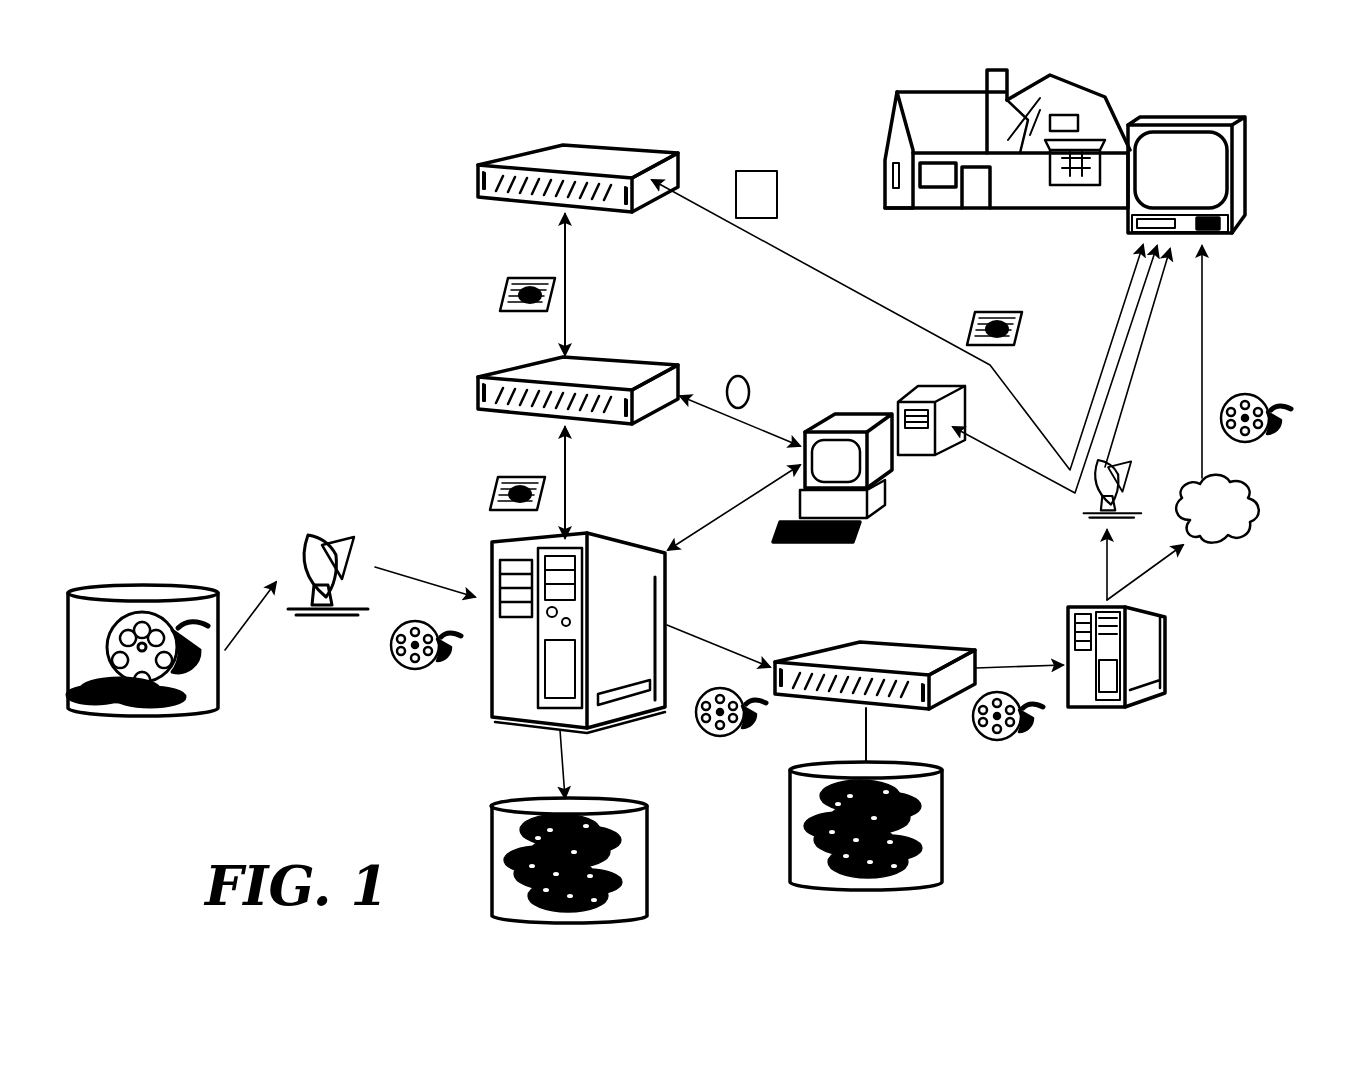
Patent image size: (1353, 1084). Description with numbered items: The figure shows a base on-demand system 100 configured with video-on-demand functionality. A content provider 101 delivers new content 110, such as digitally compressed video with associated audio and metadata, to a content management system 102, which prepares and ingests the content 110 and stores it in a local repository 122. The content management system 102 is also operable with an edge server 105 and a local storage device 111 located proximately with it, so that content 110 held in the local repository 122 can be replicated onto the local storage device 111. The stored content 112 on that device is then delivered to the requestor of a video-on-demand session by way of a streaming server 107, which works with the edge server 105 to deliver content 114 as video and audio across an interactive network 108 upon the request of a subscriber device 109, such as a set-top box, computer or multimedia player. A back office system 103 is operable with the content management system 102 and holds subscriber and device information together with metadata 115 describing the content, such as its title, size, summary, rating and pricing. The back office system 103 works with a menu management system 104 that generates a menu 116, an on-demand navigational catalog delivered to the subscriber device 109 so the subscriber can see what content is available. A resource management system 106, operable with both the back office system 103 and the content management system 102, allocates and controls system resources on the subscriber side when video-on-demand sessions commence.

The base on-demand system 100 is at (226, 452).
The content provider 101 is at (205, 688).
The content management system 102 is at (607, 663).
The back office system 103 is at (512, 405).
The menu management system 104 is at (498, 196).
The edge server 105 is at (875, 688).
The resource management system 106 is at (880, 455).
The streaming server 107 is at (1136, 665).
The interactive network 108 is at (1250, 546).
The subscriber device 109 is at (1250, 225).
The content 110 is at (415, 670).
The local storage device 111 is at (875, 827).
The stored content 112 is at (808, 800).
The content 114 is at (1248, 394).
The metadata 115 is at (493, 496).
The menu 116 is at (750, 182).
The local repository 122 is at (490, 855).